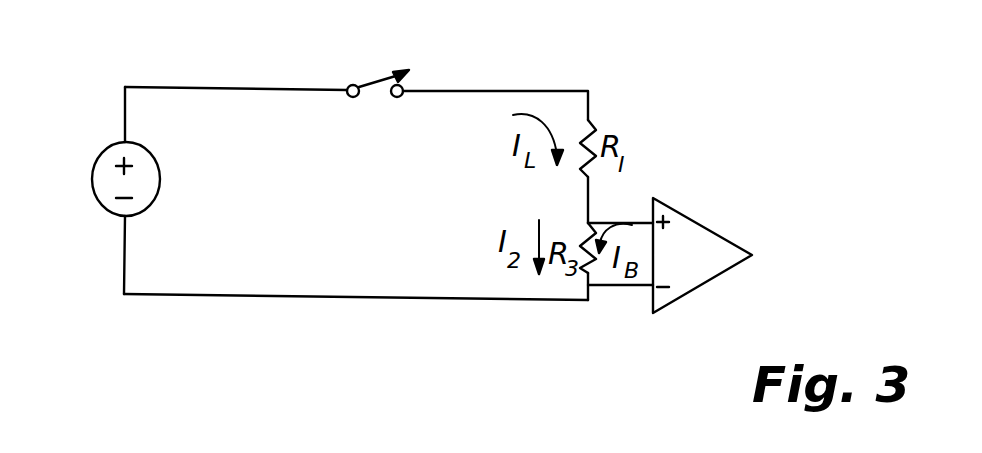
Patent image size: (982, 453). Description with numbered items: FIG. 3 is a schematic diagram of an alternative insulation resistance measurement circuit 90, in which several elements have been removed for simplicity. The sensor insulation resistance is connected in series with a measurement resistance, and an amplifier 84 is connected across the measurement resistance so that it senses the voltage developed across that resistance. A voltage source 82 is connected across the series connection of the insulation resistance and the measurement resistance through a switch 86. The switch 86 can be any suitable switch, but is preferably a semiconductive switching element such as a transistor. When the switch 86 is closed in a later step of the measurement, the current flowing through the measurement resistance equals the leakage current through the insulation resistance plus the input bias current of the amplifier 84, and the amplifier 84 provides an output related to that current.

The voltage source 82 is at (104, 148).
The amplifier 84 is at (689, 218).
The switch 86 is at (374, 83).
The insulation resistance measurement circuit 90 is at (447, 309).